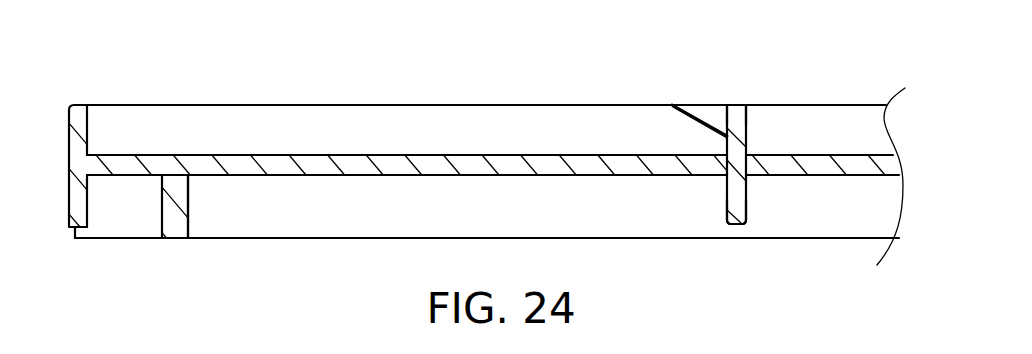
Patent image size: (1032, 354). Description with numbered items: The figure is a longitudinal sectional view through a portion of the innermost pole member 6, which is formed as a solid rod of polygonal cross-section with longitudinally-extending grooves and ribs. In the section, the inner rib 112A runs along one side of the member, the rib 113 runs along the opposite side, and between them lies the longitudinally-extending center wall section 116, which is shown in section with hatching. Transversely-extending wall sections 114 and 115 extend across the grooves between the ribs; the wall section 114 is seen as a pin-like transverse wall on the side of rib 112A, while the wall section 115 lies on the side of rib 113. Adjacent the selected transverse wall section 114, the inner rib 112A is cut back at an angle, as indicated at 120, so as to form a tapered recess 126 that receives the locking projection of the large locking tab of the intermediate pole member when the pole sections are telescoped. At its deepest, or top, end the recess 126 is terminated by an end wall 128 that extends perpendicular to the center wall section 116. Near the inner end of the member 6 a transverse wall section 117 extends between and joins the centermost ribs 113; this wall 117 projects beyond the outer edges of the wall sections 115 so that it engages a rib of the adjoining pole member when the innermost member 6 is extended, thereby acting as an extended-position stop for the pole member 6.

The innermost member 6 is at (265, 80).
The inner rib 112A is at (370, 126).
The rib 113 is at (348, 205).
The transversely-extending wall section 114 is at (753, 117).
The transversely-extending wall section 115 is at (724, 200).
The center wall section 116 is at (463, 155).
The transverse wall section 117 is at (188, 213).
The angled cut-back 120 is at (698, 120).
The tapered recess 126 is at (713, 116).
The end wall 128 is at (735, 117).